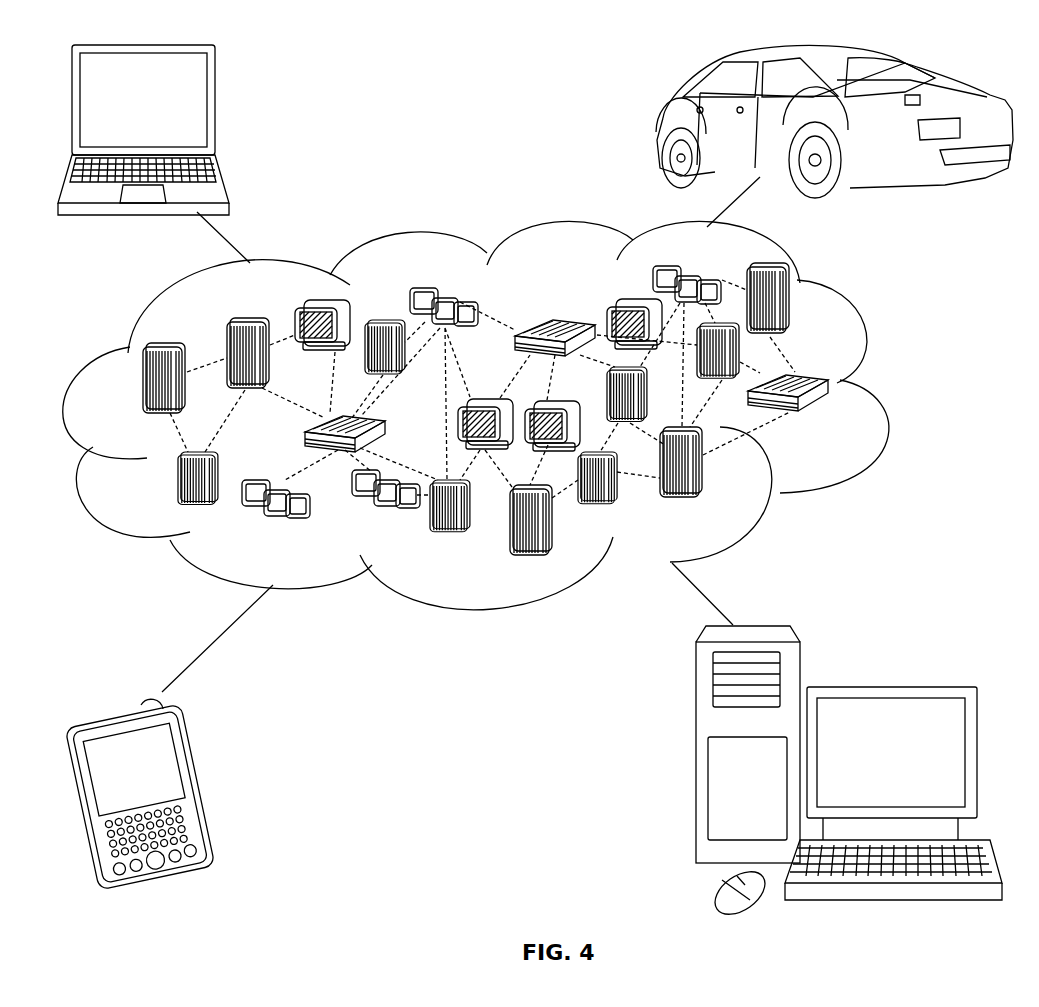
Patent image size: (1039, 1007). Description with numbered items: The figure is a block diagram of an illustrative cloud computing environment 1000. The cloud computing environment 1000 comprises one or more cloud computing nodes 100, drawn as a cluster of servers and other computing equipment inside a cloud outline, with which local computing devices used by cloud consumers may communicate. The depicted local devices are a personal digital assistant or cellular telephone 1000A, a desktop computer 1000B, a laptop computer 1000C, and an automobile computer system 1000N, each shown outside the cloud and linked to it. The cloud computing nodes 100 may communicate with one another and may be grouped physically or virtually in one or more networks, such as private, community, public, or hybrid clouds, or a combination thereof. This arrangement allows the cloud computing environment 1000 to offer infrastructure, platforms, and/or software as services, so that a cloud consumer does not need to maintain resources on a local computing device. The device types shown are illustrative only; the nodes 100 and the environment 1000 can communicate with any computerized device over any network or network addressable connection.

The cloud computing environment 1000 is at (888, 389).
The cloud computing nodes 100 is at (832, 418).
The personal digital assistant (PDA) or cellular telephone 1000A is at (207, 783).
The desktop computer 1000B is at (889, 683).
The laptop computer 1000C is at (215, 108).
The automobile computer system 1000N is at (662, 125).